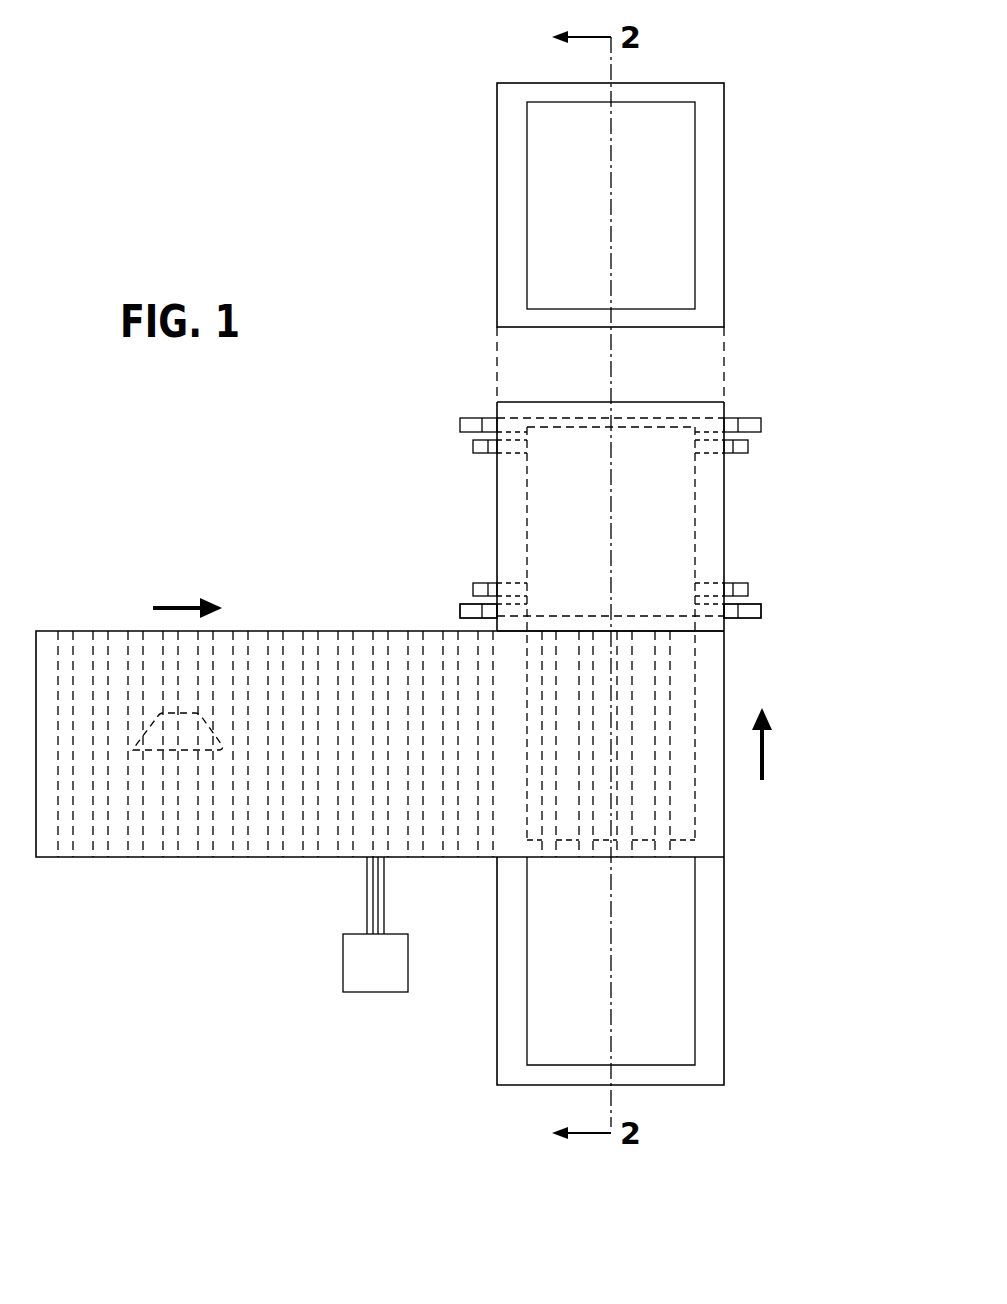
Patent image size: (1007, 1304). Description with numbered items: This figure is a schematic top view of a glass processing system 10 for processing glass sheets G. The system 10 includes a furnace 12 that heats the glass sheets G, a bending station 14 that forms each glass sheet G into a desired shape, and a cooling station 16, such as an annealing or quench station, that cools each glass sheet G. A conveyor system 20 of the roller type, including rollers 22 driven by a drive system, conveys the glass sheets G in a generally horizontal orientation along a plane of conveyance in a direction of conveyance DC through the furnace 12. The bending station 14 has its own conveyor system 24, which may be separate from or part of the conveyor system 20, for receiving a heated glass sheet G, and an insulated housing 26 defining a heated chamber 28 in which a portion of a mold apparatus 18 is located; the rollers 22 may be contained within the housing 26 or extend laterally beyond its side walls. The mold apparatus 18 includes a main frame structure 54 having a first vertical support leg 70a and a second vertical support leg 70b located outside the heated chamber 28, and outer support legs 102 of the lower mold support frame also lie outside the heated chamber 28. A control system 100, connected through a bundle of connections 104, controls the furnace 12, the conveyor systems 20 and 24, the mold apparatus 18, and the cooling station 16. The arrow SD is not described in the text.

The glass processing system 10 is at (330, 153).
The furnace 12 is at (139, 899).
The bending station 14 is at (745, 487).
The cooling station 16 is at (779, 168).
The mold apparatus 18 is at (712, 640).
The conveyor system 20 is at (228, 858).
The rollers 22 is at (297, 848).
The conveyor system 24 is at (532, 810).
The insulated housing 26 is at (724, 566).
The heated chamber 28 is at (702, 515).
The main frame structure 54 is at (450, 398).
The first vertical support leg 70a is at (460, 611).
The second vertical support leg 70b is at (761, 611).
The control system 100 is at (337, 1008).
The outer support legs 102 is at (473, 447).
The bundle of connections 104 is at (384, 920).
The glass sheet G is at (147, 723).
The direction of conveyance DC is at (176, 606).
The spray direction SD is at (765, 770).